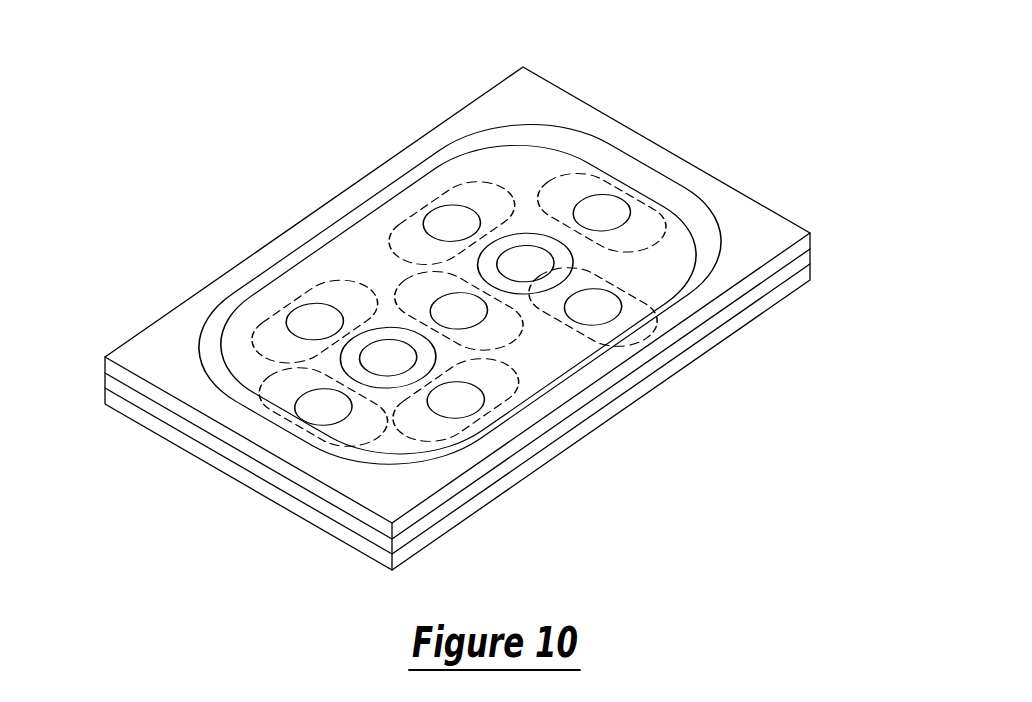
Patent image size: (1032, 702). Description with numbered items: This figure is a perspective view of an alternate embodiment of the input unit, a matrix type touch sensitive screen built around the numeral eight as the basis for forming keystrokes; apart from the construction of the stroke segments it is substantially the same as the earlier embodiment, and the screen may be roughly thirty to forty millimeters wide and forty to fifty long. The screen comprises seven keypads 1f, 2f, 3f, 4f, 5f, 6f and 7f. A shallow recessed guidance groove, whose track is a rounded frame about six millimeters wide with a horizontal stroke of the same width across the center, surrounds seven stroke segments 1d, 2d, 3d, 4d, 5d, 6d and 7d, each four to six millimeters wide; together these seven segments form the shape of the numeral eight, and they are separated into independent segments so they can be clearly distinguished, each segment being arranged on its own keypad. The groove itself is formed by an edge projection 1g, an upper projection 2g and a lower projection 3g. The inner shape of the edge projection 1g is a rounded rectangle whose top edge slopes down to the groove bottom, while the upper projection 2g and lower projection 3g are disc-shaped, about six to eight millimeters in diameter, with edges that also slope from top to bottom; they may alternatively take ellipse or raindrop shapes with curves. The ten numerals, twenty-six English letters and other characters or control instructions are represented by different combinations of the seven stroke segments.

The edge projection 1g is at (638, 148).
The keypad 1f is at (600, 214).
The stroke segment 1d is at (646, 213).
The keypad 2f is at (452, 223).
The stroke segment 2d is at (470, 183).
The upper projection 2g is at (525, 262).
The keypad 3f is at (598, 307).
The stroke segment 3d is at (660, 290).
The lower projection 3g is at (372, 357).
The keypad 4f is at (458, 311).
The stroke segment 4d is at (405, 298).
The keypad 5f is at (316, 320).
The stroke segment 5d is at (258, 334).
The keypad 6f is at (458, 401).
The stroke segment 6d is at (437, 438).
The keypad 7f is at (322, 409).
The stroke segment 7d is at (282, 377).